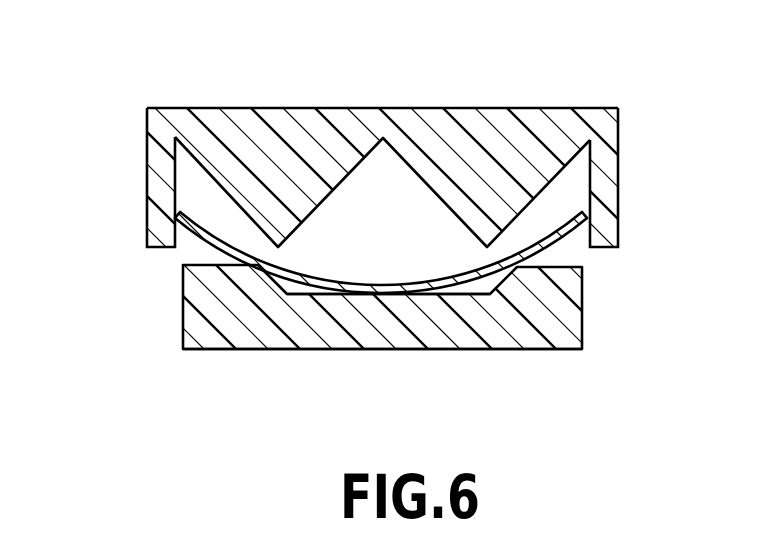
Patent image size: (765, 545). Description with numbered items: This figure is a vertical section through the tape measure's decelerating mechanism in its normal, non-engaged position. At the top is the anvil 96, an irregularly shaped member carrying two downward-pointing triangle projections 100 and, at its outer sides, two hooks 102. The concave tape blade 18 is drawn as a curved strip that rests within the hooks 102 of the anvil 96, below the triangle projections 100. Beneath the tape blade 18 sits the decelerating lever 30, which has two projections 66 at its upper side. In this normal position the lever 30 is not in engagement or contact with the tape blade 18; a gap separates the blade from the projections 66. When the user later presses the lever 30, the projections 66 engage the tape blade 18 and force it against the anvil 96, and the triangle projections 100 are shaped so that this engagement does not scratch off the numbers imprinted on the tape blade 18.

The anvil 96 is at (407, 112).
The triangle projections 100 is at (280, 238).
The hooks 102 is at (155, 228).
The projections 66 is at (193, 283).
The decelerating lever 30 is at (363, 317).
The tape blade 18 is at (513, 267).